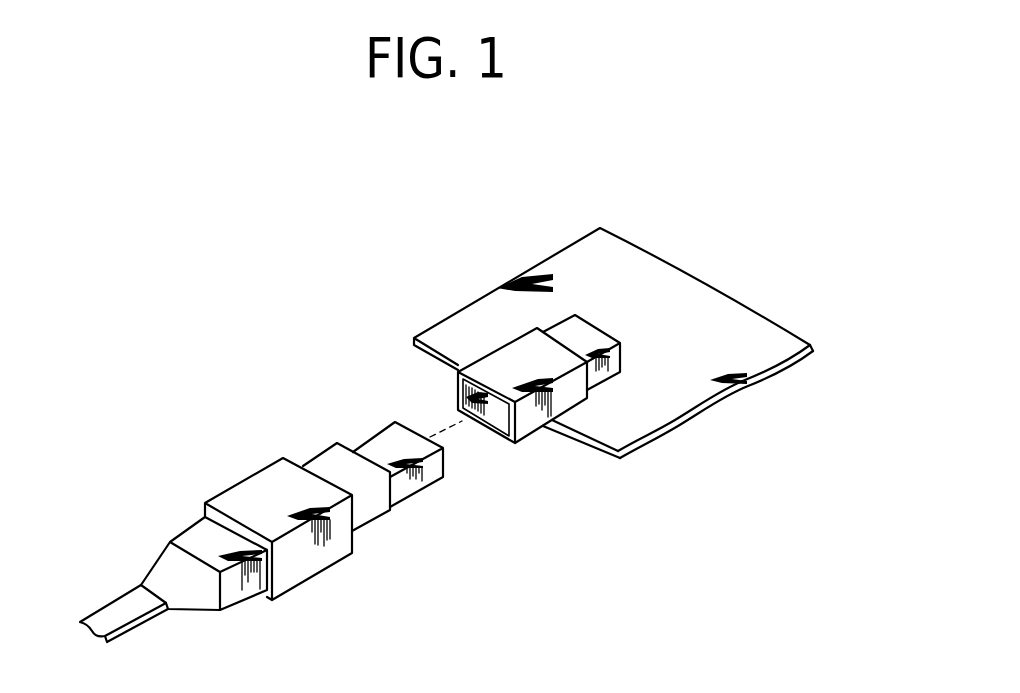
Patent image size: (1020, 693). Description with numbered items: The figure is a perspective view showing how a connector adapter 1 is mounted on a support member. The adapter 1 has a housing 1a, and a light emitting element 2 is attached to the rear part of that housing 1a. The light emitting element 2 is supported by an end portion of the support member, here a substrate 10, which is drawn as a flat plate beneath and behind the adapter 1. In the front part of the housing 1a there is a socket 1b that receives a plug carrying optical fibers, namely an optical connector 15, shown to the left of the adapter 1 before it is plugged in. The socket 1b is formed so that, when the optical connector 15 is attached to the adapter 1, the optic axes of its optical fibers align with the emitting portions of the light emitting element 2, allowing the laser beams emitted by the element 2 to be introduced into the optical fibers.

The connector adapter 1 is at (511, 386).
The housing 1a is at (510, 362).
The socket 1b is at (502, 416).
The light emitting element 2 is at (592, 338).
The substrate 10 is at (572, 275).
The optical connector 15 is at (267, 482).